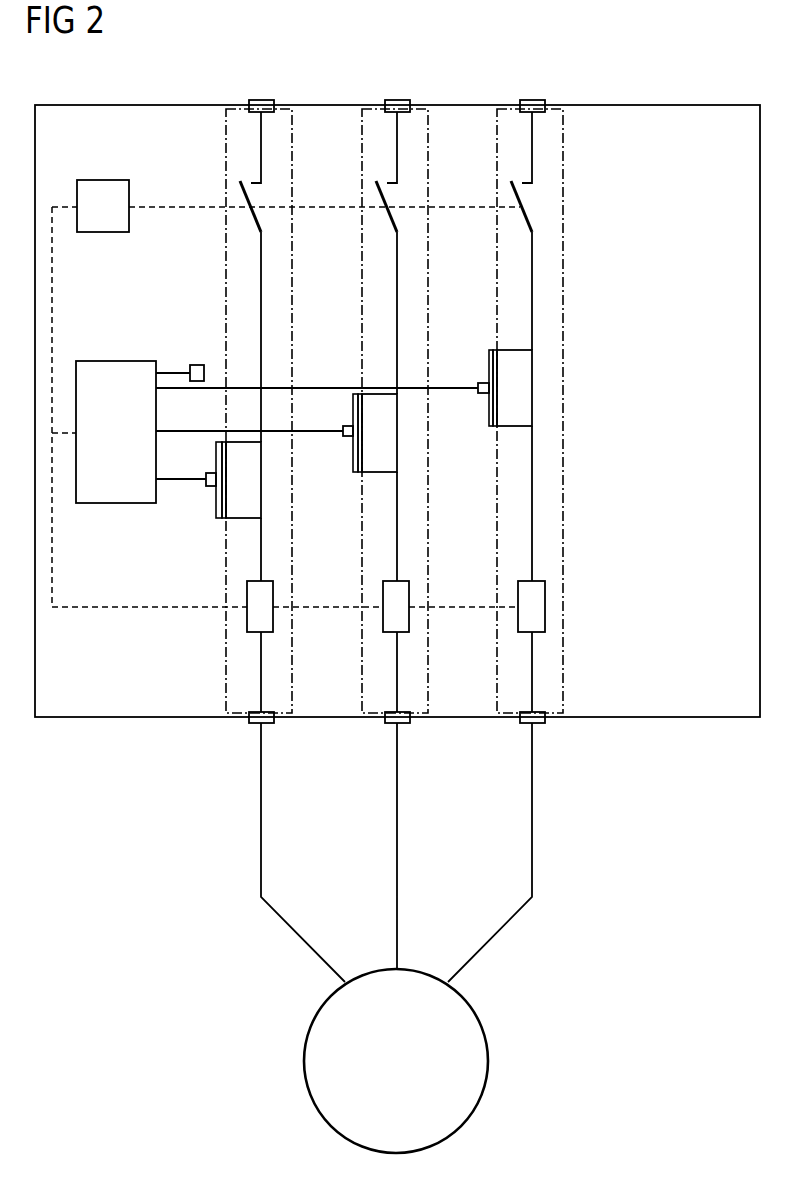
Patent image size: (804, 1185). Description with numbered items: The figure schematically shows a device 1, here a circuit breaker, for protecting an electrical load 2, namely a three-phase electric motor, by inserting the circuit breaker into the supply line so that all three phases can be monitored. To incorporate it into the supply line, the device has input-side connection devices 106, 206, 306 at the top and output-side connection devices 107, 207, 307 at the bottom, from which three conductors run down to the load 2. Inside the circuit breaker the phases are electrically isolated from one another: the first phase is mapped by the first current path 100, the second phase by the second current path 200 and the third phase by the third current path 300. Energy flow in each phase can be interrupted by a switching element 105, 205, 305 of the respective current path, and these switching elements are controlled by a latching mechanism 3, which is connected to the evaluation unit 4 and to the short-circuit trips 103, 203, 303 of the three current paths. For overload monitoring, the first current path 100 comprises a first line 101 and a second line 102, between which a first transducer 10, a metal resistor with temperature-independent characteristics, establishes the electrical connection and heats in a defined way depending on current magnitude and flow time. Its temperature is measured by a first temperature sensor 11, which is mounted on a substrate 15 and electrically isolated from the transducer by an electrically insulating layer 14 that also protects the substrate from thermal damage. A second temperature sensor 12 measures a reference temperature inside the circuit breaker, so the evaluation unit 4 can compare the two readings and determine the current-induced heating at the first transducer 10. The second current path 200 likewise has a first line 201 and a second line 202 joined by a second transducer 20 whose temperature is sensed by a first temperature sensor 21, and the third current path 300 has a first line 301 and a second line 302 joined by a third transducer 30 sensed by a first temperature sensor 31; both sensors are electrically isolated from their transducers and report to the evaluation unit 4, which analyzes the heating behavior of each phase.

The device 1 is at (708, 105).
The electrical load 2 is at (490, 1050).
The latching mechanism 3 is at (101, 180).
The evaluation unit 4 is at (104, 361).
The first transducer 10 is at (525, 390).
The first temperature sensor of the first temperature measuring unit 11 is at (483, 383).
The second temperature sensor of the first temperature measuring unit 12 is at (197, 365).
The electrically insulating layer 14 is at (494, 407).
The substrate 15 is at (491, 414).
The second transducer 20 is at (390, 430).
The first temperature sensor of the second temperature measuring unit 21 is at (346, 426).
The third transducer 30 is at (253, 469).
The first temperature sensor of the third temperature measuring unit 31 is at (207, 487).
The first current path 100 is at (563, 148).
The first line 101 is at (532, 276).
The second line 102 is at (532, 566).
The short-circuit trip 103 is at (518, 620).
The switching element 105 is at (532, 198).
The input-side connection device 106 is at (537, 100).
The output-side connection device 107 is at (527, 727).
The second current path 200 is at (428, 148).
The first line 201 is at (397, 276).
The second line 202 is at (397, 566).
The short-circuit trip 203 is at (383, 620).
The switching element 205 is at (397, 198).
The input-side connection device 206 is at (396, 100).
The output-side connection device 207 is at (391, 727).
The third current path 300 is at (292, 148).
The first line 301 is at (261, 276).
The second line 302 is at (261, 566).
The short-circuit trip 303 is at (247, 620).
The switching element 305 is at (261, 198).
The input-side connection device 306 is at (263, 100).
The output-side connection device 307 is at (253, 727).